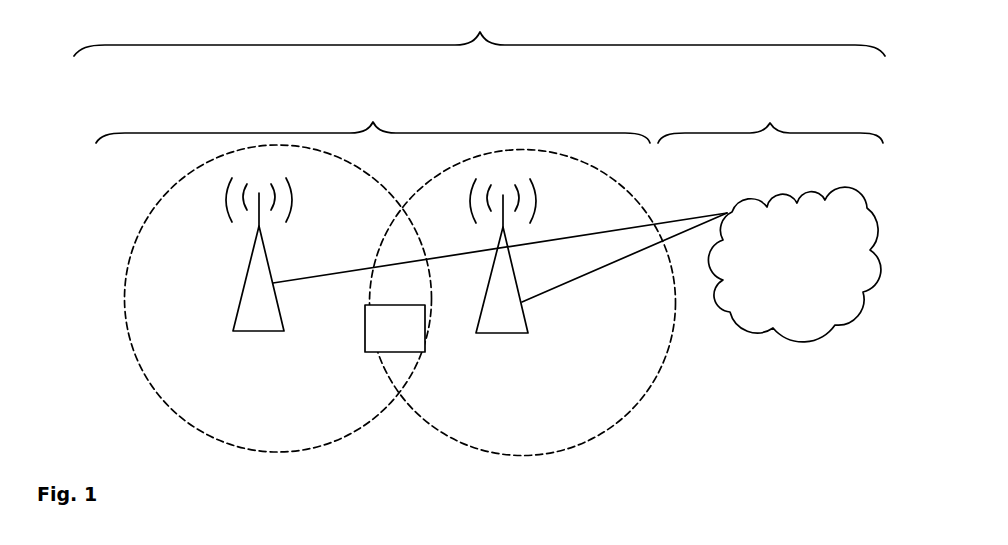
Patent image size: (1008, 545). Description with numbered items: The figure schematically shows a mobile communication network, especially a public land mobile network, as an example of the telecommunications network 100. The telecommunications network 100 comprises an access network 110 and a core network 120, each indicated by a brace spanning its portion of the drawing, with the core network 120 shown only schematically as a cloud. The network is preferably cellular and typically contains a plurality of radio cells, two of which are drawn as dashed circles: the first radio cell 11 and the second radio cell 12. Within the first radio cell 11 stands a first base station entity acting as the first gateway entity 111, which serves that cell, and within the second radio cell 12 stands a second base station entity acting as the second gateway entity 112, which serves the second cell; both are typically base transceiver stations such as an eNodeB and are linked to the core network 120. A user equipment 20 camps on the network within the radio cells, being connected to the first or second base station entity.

The telecommunications network 100 is at (479, 31).
The access network 110 is at (373, 120).
The core network 120 is at (770, 220).
The first radio cell 11 is at (173, 410).
The second radio cell 12 is at (437, 430).
The first gateway entity 111 is at (259, 254).
The second gateway entity 112 is at (503, 256).
The user equipment 20 is at (395, 328).